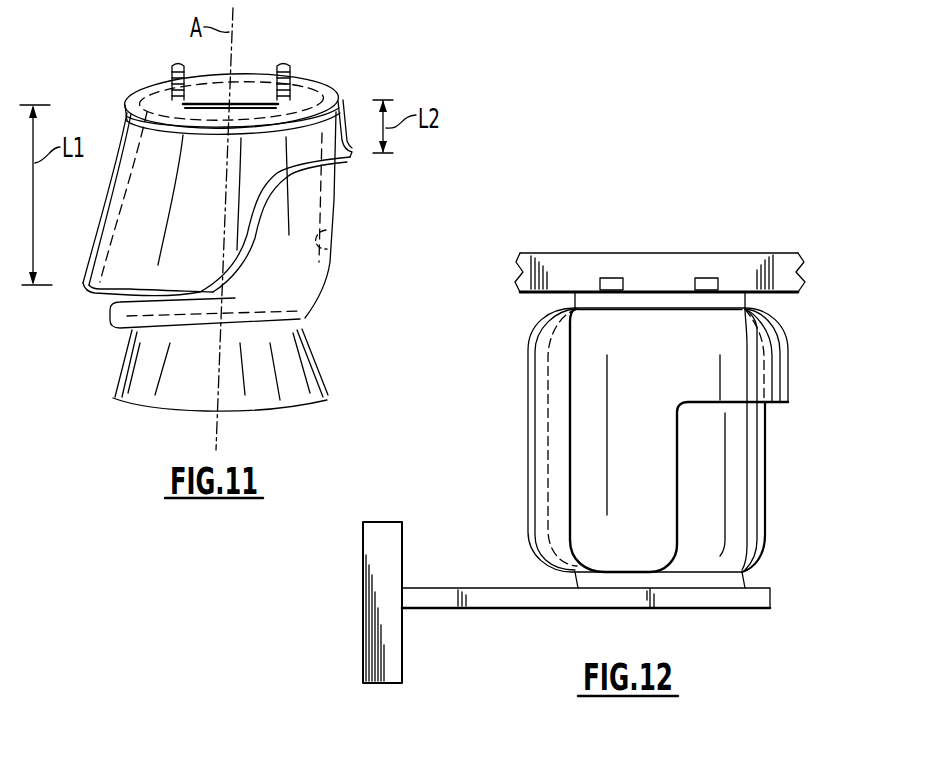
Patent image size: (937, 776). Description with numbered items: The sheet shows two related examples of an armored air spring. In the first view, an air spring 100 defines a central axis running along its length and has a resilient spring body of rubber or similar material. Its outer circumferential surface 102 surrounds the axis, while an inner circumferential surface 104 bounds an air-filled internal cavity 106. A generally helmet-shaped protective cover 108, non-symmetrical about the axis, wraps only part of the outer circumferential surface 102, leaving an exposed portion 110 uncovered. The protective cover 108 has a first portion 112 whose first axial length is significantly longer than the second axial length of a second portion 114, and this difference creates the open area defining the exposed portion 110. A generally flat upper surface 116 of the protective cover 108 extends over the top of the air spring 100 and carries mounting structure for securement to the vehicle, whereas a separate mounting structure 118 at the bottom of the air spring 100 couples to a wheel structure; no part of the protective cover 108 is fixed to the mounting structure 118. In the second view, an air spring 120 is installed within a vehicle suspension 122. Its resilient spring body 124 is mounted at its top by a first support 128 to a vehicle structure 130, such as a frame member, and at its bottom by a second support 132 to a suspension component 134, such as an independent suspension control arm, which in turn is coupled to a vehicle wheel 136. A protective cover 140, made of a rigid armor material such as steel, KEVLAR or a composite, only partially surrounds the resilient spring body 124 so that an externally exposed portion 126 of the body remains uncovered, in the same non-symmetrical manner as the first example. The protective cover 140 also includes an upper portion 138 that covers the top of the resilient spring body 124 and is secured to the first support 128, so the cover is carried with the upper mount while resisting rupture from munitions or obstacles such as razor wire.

In FIG. 11, the air spring 100 is at (171, 333).
In FIG. 11, the outer circumferential surface 102 is at (285, 215).
In FIG. 11, the inner circumferential surface 104 is at (364, 197).
In FIG. 11, the internal cavity 106 is at (290, 249).
In FIG. 11, the protective cover 108 is at (197, 102).
In FIG. 11, the exposed portion 110 is at (251, 277).
In FIG. 11, the first portion 112 is at (95, 198).
In FIG. 11, the second portion 114 is at (374, 102).
In FIG. 11, the upper surface 116 is at (238, 63).
In FIG. 11, the mounting structure 118 is at (244, 370).
In FIG. 12, the air spring 120 is at (661, 440).
In FIG. 12, the vehicle suspension 122 is at (569, 579).
In FIG. 12, the resilient spring body 124 is at (794, 487).
In FIG. 12, the externally exposed portion 126 is at (782, 486).
In FIG. 12, the first support 128 is at (640, 263).
In FIG. 12, the vehicle structure 130 is at (685, 275).
In FIG. 12, the second support 132 is at (650, 607).
In FIG. 12, the suspension component 134 is at (586, 621).
In FIG. 12, the vehicle wheel 136 is at (367, 579).
In FIG. 12, the upper portion 138 is at (660, 331).
In FIG. 12, the protective cover 140 is at (599, 440).